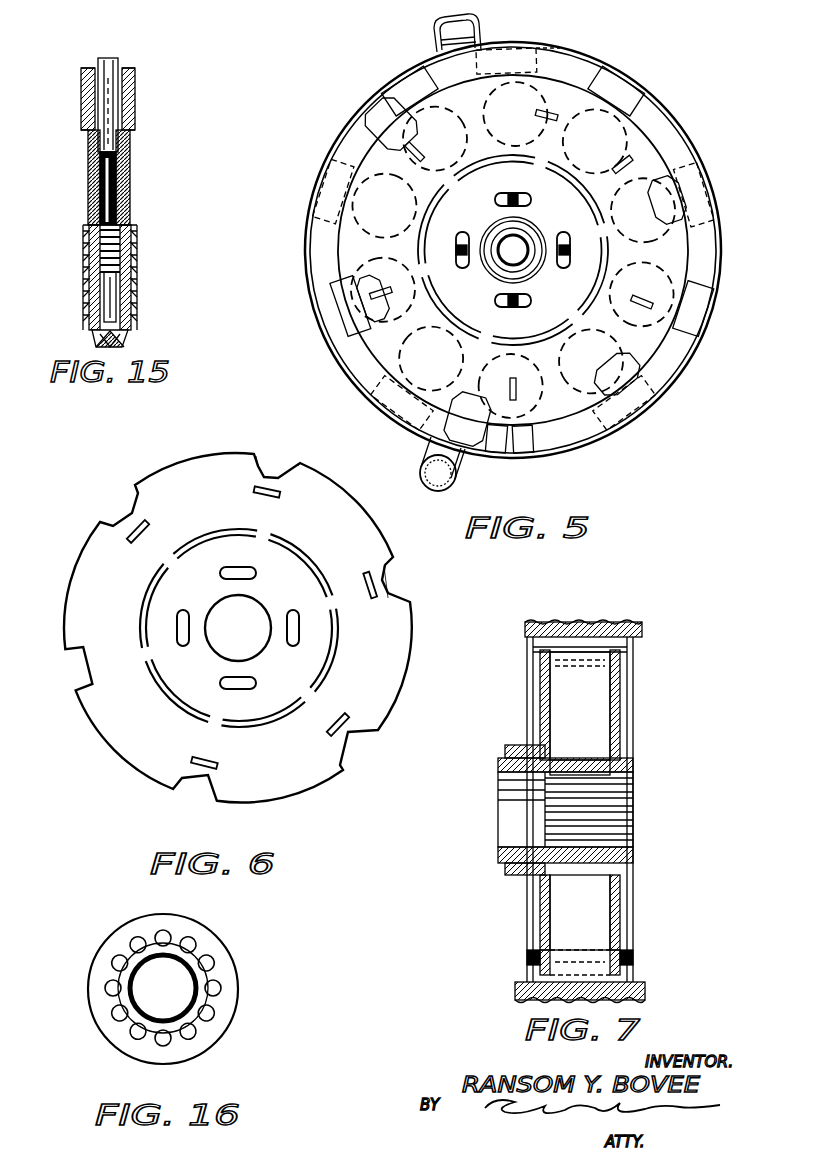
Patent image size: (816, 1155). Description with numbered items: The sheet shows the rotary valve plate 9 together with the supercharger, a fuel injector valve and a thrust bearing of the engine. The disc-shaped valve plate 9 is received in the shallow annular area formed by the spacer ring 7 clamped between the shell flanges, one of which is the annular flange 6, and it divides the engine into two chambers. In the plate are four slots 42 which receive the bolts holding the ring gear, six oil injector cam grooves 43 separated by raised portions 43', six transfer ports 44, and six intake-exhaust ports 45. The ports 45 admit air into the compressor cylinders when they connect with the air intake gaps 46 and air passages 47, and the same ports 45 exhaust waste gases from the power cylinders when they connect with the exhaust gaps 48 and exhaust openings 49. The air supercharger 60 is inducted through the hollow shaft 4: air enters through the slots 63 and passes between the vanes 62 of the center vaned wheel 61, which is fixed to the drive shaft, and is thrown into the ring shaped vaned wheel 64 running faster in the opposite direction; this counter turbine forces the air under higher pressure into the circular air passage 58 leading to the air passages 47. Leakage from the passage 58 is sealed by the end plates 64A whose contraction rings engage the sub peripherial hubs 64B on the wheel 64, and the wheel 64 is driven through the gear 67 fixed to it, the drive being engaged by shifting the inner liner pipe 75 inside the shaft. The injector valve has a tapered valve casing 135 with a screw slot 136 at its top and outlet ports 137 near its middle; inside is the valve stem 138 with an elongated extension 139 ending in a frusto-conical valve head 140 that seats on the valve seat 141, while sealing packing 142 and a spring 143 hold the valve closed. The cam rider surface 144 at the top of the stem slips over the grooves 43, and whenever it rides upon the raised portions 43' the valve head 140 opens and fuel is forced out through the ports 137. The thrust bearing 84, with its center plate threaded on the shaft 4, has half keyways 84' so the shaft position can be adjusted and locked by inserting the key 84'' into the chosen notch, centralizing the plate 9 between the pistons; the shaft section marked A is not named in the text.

In FIG. 7, the hollow shaft 4 is at (518, 827).
In FIG. 5, the annular flange 6 is at (575, 72).
In FIG. 5, the annular spacer ring 7 is at (572, 60).
In FIG. 5, the rotary valve plate 9 is at (630, 160).
In FIG. 6, the rotary valve plate 9 is at (92, 590).
In FIG. 6, the slots 42 is at (226, 681).
In FIG. 6, the oil injector cam grooves 43 is at (295, 628).
In FIG. 6, the raised portions 43' is at (208, 599).
In FIG. 6, the transfer ports 44 is at (258, 488).
In FIG. 5, the intake-exhaust ports 45 is at (684, 232).
In FIG. 6, the intake-exhaust ports 45 is at (280, 468).
In FIG. 5, the air intake gaps 46 is at (410, 80).
In FIG. 5, the air passages 47 is at (384, 100).
In FIG. 5, the exhaust gaps 48 is at (322, 185).
In FIG. 5, the exhaust openings 49 is at (522, 45).
In FIG. 7, the circular air passage 58 is at (640, 636).
In FIG. 7, the air supercharger 60 is at (652, 874).
In FIG. 7, the center vaned wheel 61 is at (613, 729).
In FIG. 7, the vanes 62 is at (588, 723).
In FIG. 7, the slots 63 is at (628, 813).
In FIG. 7, the ring shaped vaned wheel 64 is at (616, 664).
In FIG. 7, the sealed end plates 64A is at (526, 968).
In FIG. 7, the sub peripherial hubs 64B is at (526, 956).
In FIG. 7, the gear 67 is at (507, 748).
In FIG. 16, the inner liner pipe 75 is at (130, 980).
In FIG. 16, the thrust bearing 84 is at (139, 989).
In FIG. 16, the half keyways 84' is at (164, 988).
In FIG. 16, the key 84'' is at (203, 921).
In FIG. 16, the shaft A is at (118, 998).
In FIG. 15, the valve casing 135 is at (128, 279).
In FIG. 15, the screw slot 136 is at (88, 68).
In FIG. 15, the outlet ports 137 is at (90, 223).
In FIG. 15, the valve stem 138 is at (112, 92).
In FIG. 15, the elongated extension 139 is at (95, 254).
In FIG. 15, the valve head 140 is at (94, 331).
In FIG. 15, the valve seat 141 is at (126, 332).
In FIG. 15, the sealing packing 142 is at (130, 199).
In FIG. 15, the spring 143 is at (118, 250).
In FIG. 15, the cam rider surface 144 is at (98, 68).